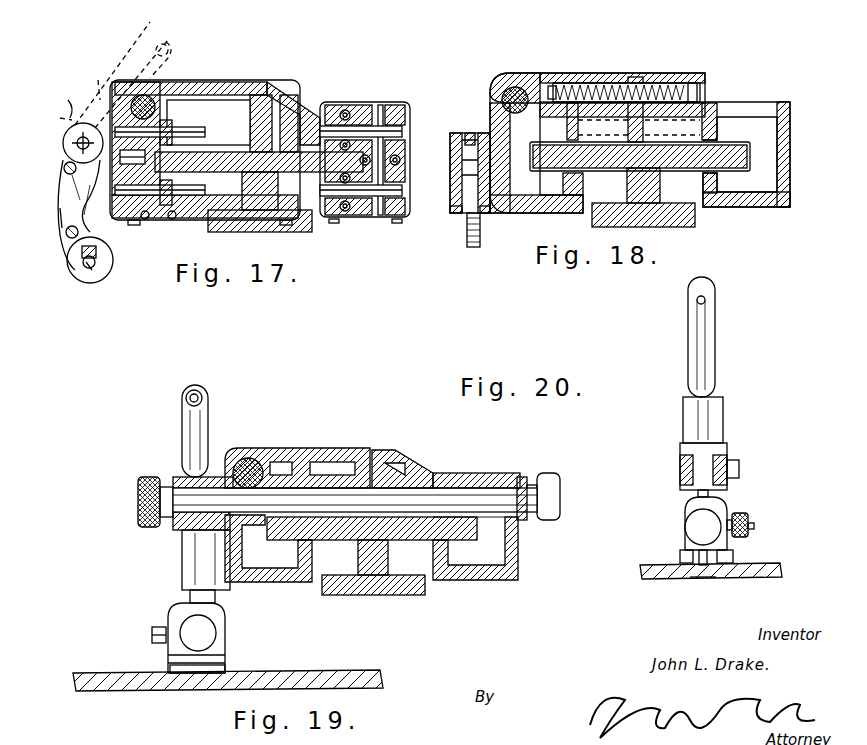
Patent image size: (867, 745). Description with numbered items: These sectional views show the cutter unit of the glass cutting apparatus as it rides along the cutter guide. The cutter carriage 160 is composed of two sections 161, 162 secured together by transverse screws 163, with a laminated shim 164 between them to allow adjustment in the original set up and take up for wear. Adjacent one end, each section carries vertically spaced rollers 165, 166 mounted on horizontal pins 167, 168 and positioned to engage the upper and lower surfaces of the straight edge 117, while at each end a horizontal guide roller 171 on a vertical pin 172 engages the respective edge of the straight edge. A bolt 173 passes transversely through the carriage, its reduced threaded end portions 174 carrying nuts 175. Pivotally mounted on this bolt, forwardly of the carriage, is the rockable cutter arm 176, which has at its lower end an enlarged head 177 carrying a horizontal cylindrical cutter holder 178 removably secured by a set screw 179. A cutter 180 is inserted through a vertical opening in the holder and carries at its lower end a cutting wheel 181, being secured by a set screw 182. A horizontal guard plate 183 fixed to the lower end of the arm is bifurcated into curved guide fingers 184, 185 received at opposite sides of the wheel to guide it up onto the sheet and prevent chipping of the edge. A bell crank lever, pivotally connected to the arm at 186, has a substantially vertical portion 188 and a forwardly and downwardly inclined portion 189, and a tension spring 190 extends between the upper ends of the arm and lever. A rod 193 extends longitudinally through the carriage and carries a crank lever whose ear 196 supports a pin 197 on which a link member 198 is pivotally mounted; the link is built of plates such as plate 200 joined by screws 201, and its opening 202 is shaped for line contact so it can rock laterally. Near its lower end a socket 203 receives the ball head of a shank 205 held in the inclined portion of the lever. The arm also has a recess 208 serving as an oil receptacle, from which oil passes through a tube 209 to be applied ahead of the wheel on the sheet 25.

In FIG. 19, the base plate 25 is at (332, 675).
In FIG. 20, the base plate 25 is at (640, 571).
In FIG. 17, the straight edge 117 is at (303, 152).
In FIG. 18, the straight edge 117 is at (665, 160).
In FIG. 19, the straight edge 117 is at (415, 540).
In FIG. 17, the cutter carriage 160 is at (314, 90).
In FIG. 18, the cutter carriage 160 is at (605, 73).
In FIG. 19, the cutter carriage 160 is at (337, 448).
In FIG. 17, the first section 161 is at (236, 82).
In FIG. 18, the first section 161 is at (548, 73).
In FIG. 19, the first section 161 is at (302, 448).
In FIG. 17, the second section 162 is at (345, 105).
In FIG. 18, the second section 162 is at (768, 103).
In FIG. 19, the second section 162 is at (480, 462).
In FIG. 18, the transverse screws 163 is at (660, 90).
In FIG. 17, the laminated shim 164 is at (263, 82).
In FIG. 19, the laminated shim 164 is at (395, 450).
In FIG. 17, the upper roller 165 is at (225, 118).
In FIG. 17, the lower roller 166 is at (176, 218).
In FIG. 17, the horizontal pin 167 is at (98, 80).
In FIG. 17, the horizontal pin 168 is at (145, 219).
In FIG. 17, the horizontal guide roller 171 is at (113, 155).
In FIG. 18, the horizontal guide roller 171 is at (450, 158).
In FIG. 17, the vertical pin 172 is at (118, 187).
In FIG. 19, the bolt 173 is at (492, 525).
In FIG. 19, the reduced threaded end portions 174 is at (522, 477).
In FIG. 19, the nuts 175 is at (140, 500).
In FIG. 18, the cutter arm 176 is at (455, 211).
In FIG. 19, the cutter arm 176 is at (180, 540).
In FIG. 19, the enlarged head 177 is at (170, 658).
In FIG. 20, the enlarged head 177 is at (688, 510).
In FIG. 19, the cutter holder 178 is at (212, 633).
In FIG. 20, the cutter holder 178 is at (716, 514).
In FIG. 19, the set screw 179 is at (155, 632).
In FIG. 20, the set screw 179 is at (752, 528).
In FIG. 20, the cutter 180 is at (706, 427).
In FIG. 20, the cutting wheel 181 is at (700, 578).
In FIG. 20, the set screw 182 is at (748, 520).
In FIG. 19, the guard plate 183 is at (200, 675).
In FIG. 20, the guide finger 184 is at (680, 556).
In FIG. 20, the guide finger 185 is at (735, 556).
In FIG. 20, the pivot 186 is at (738, 465).
In FIG. 19, the vertical portion 188 is at (200, 420).
In FIG. 20, the vertical portion 188 is at (716, 340).
In FIG. 20, the inclined portion 189 is at (682, 470).
In FIG. 19, the tension spring 190 is at (182, 392).
In FIG. 17, the rod 193 is at (143, 95).
In FIG. 18, the rod 193 is at (518, 88).
In FIG. 19, the rod 193 is at (255, 460).
In FIG. 17, the ear 196 is at (68, 100).
In FIG. 17, the pin 197 is at (162, 43).
In FIG. 17, the link member 198 is at (105, 58).
In FIG. 17, the plate 200 is at (62, 202).
In FIG. 17, the screws 201 is at (60, 228).
In FIG. 17, the opening 202 is at (62, 120).
In FIG. 17, the socket 203 is at (88, 283).
In FIG. 17, the shank 205 is at (80, 268).
In FIG. 18, the recess 208 is at (478, 122).
In FIG. 18, the tube 209 is at (482, 220).